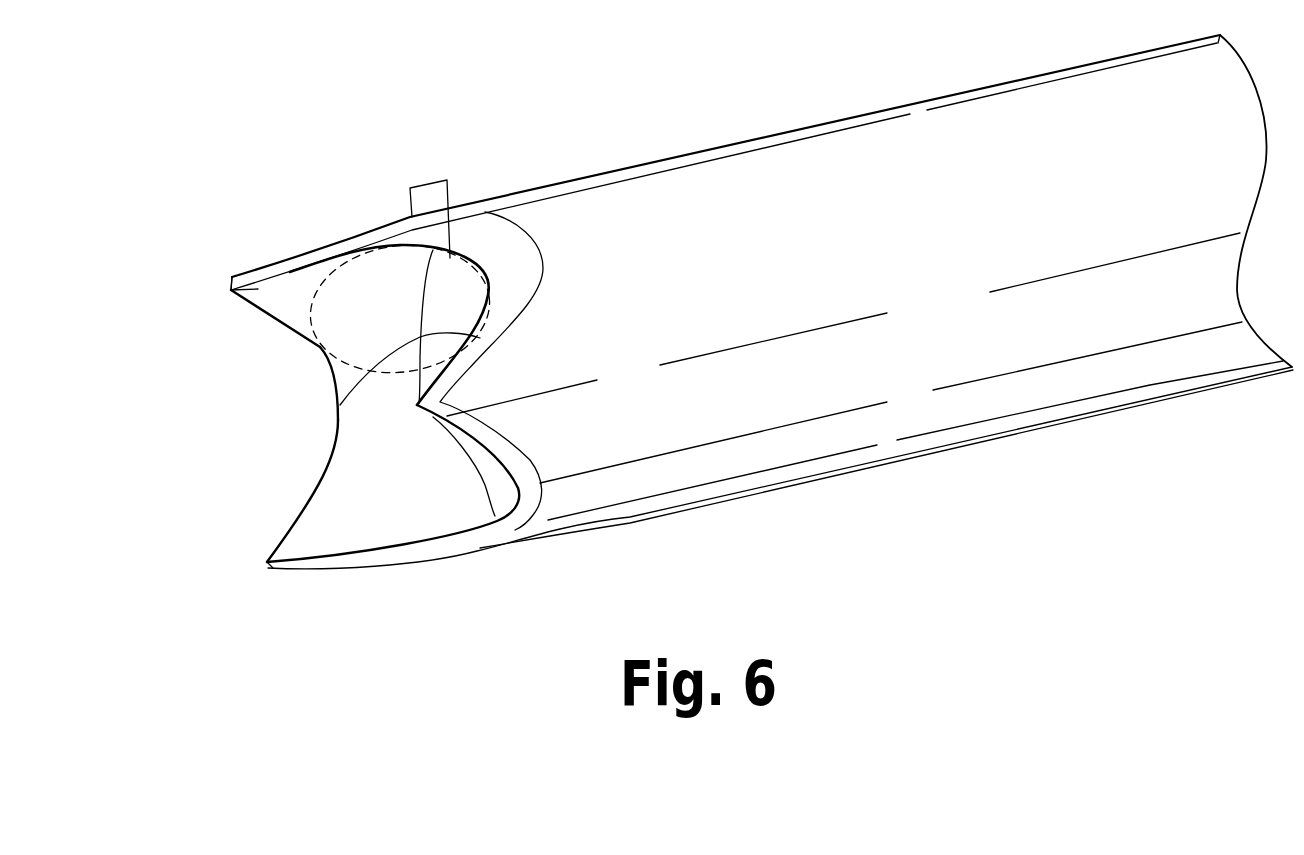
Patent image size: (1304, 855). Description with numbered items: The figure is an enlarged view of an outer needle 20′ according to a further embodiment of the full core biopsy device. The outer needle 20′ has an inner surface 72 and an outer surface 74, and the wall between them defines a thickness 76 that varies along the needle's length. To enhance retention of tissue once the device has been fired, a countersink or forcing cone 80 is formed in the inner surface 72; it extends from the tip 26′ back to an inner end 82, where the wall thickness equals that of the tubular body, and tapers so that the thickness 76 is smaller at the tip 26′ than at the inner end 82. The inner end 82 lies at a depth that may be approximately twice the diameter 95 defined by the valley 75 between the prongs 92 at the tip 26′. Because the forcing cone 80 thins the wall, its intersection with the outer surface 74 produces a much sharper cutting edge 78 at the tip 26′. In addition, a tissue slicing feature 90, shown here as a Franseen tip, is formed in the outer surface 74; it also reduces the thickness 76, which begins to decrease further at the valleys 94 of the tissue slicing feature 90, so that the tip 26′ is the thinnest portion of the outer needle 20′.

The outer needle 20′ is at (838, 473).
The tip 26′ is at (281, 262).
The inner surface 72 is at (232, 277).
The prongs 92 is at (231, 290).
The valley 75 is at (290, 333).
The countersink or forcing cone 80 is at (343, 507).
The cutting edge 78 is at (340, 405).
The thickness 76 is at (337, 353).
The tissue slicing feature 90 is at (390, 233).
The diameter 95 is at (430, 270).
The valleys 94 is at (523, 193).
The inner end 82 is at (467, 482).
The outer surface 74 is at (602, 483).